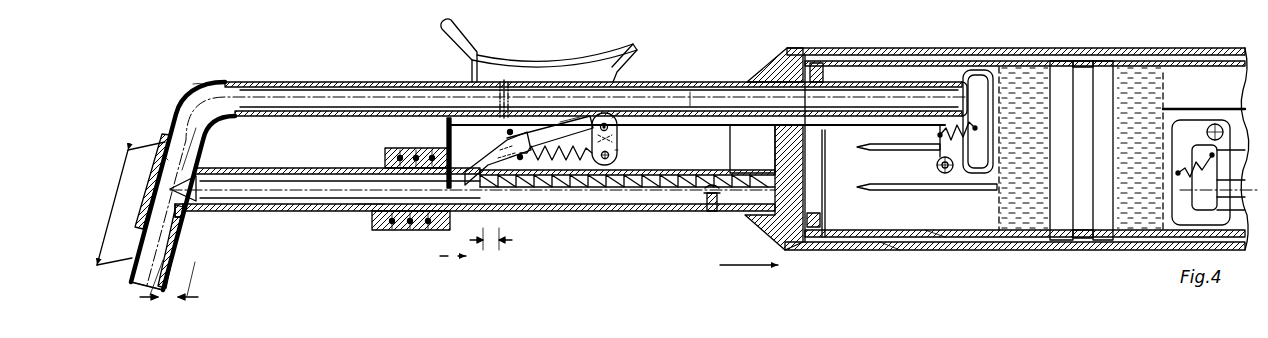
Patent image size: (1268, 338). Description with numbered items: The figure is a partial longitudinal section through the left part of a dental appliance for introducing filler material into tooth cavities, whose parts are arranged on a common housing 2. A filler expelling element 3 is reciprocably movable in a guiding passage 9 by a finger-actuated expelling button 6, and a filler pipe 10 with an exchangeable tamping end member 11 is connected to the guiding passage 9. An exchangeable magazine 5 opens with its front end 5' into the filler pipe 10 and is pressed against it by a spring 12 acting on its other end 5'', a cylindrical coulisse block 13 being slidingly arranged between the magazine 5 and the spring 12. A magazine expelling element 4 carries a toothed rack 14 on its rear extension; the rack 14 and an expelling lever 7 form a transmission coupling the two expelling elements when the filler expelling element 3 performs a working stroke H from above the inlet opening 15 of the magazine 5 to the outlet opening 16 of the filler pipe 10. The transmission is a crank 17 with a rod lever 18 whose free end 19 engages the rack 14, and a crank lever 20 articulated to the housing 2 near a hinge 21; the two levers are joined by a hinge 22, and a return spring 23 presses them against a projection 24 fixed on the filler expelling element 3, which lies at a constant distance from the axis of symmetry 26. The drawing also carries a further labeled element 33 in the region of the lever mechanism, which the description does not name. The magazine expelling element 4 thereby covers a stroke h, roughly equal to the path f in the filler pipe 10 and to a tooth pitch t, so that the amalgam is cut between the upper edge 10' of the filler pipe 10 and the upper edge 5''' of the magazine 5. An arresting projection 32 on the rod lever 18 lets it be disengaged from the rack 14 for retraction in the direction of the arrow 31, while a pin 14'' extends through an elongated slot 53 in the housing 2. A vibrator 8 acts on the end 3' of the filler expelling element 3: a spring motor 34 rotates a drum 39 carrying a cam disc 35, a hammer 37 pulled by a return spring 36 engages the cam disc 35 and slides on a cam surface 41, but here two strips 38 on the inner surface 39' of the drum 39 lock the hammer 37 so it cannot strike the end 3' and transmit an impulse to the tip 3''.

The housing 2 is at (858, 48).
The filler expelling element 3 is at (549, 161).
The end of the filler expelling element 3' is at (959, 89).
The tip of the filler expelling element 3'' is at (127, 149).
The magazine expelling element 4 is at (444, 192).
The magazine 5 is at (472, 213).
The front end of the magazine 5' is at (340, 162).
The other end of the magazine 5'' is at (360, 237).
The upper edge of the magazine 5''' is at (214, 226).
The expelling button 6 is at (505, 66).
The expelling lever 7 is at (692, 100).
The vibrator 8 is at (880, 250).
The guiding passage 9 is at (203, 83).
The filler pipe 10 is at (129, 169).
The upper edge of the filler pipe 10' is at (154, 121).
The tamping end member 11 is at (177, 247).
The spring 12 is at (403, 231).
The coulisse block 13 is at (393, 160).
The toothed rack 14 is at (627, 218).
The pin 14'' is at (751, 165).
The inlet opening 15 is at (172, 188).
The outlet opening 16 is at (137, 282).
The crank 17 is at (610, 115).
The rod lever 18 is at (567, 125).
The free end of the rod lever 19 is at (480, 176).
The crank lever 20 is at (618, 141).
The hinge 21 is at (605, 167).
The hinge 22 is at (618, 152).
The return spring 23 is at (556, 160).
The projection 24 is at (608, 125).
The axis of symmetry 26 is at (693, 93).
The arrow 31 is at (749, 252).
The arresting projection 32 is at (520, 159).
The pawl pin 33 is at (510, 131).
The spring motor 34 is at (1033, 90).
The cam disc 35 is at (815, 63).
The return spring 36 is at (935, 232).
The hammer 37 is at (981, 97).
The strips 38 is at (862, 188).
The drum 39 is at (957, 231).
The inner surface of the drum 39' is at (1121, 189).
The cam surface 41 is at (826, 207).
The elongated slot 53 is at (711, 212).
The working stroke H is at (131, 203).
The working stroke h is at (453, 257).
The tooth pitch t is at (491, 240).
The path f is at (169, 285).